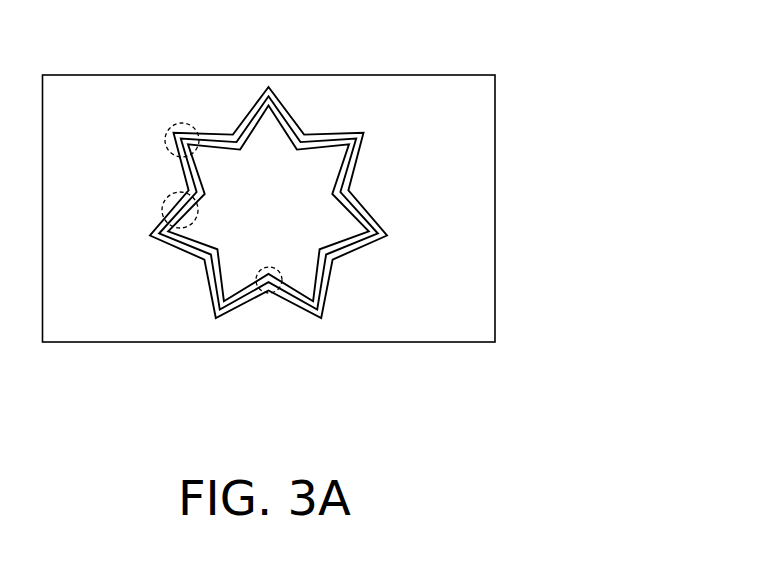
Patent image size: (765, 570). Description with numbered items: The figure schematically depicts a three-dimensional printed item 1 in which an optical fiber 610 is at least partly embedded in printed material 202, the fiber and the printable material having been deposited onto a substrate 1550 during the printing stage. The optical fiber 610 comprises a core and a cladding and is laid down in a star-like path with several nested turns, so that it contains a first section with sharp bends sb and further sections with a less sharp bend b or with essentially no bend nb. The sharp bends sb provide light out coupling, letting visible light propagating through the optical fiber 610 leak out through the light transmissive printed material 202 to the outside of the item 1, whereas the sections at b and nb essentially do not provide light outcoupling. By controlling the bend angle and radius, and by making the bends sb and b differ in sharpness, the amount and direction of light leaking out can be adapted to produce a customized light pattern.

The 3D item 1 is at (317, 188).
The 3D printed material 202 is at (290, 115).
The optical fiber 610 is at (380, 227).
The substrate 1550 is at (473, 298).
The sharp bend sb is at (170, 133).
The no bend nb is at (170, 203).
The bend b is at (266, 294).